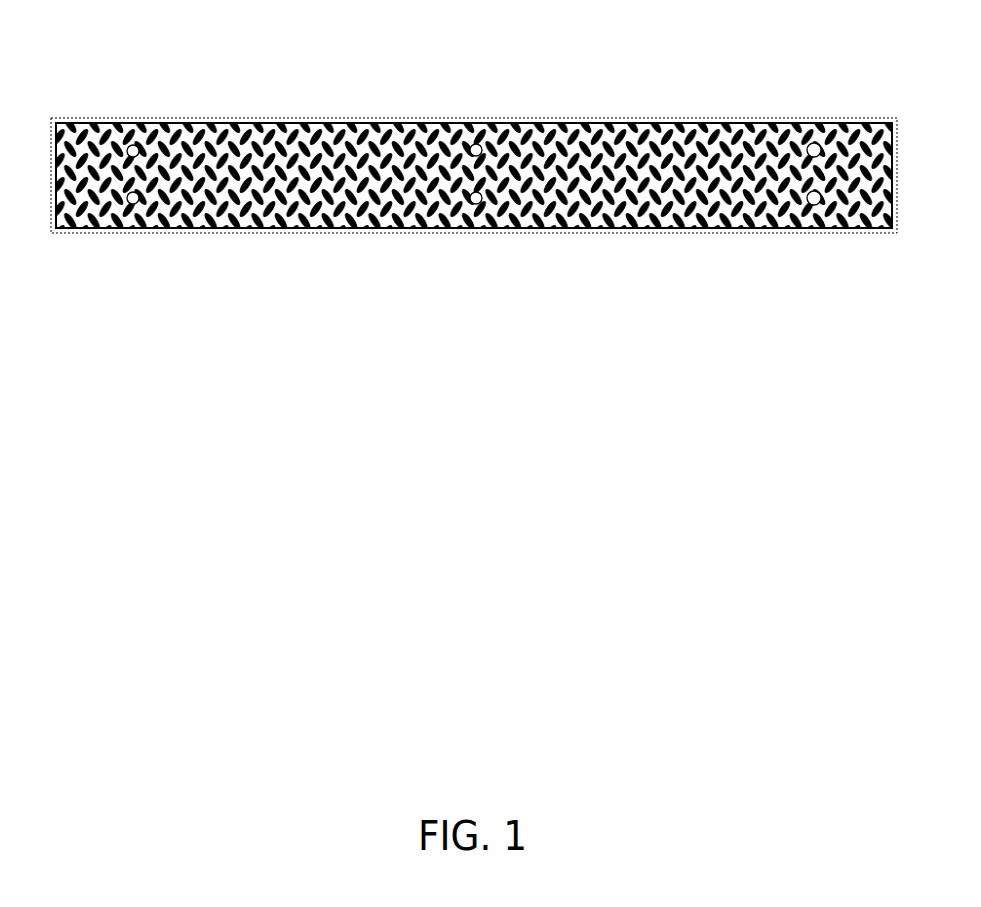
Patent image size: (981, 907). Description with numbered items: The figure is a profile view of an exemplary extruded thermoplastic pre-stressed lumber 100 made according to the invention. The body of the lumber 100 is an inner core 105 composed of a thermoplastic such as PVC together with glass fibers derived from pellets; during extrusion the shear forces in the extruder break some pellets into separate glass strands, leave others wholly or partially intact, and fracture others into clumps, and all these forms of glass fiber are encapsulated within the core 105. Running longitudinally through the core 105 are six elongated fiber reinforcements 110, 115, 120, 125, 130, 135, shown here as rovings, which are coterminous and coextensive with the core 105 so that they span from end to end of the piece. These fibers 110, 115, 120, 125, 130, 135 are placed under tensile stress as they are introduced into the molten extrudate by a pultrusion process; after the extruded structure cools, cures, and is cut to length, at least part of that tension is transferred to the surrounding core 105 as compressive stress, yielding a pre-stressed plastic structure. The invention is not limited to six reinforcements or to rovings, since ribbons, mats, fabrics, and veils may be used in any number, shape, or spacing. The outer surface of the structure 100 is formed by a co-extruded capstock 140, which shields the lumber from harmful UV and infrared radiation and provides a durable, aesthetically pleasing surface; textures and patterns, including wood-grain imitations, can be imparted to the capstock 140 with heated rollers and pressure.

The extruded thermoplastic lumber 100 is at (474, 218).
The inner core 105 is at (288, 160).
The elongated fiber reinforcement 110 is at (136, 146).
The elongated fiber reinforcement 115 is at (483, 150).
The elongated fiber reinforcement 120 is at (807, 150).
The elongated fiber reinforcement 125 is at (807, 199).
The elongated fiber reinforcement 130 is at (477, 205).
The elongated fiber reinforcement 135 is at (135, 204).
The co-extruded capstock 140 is at (473, 122).